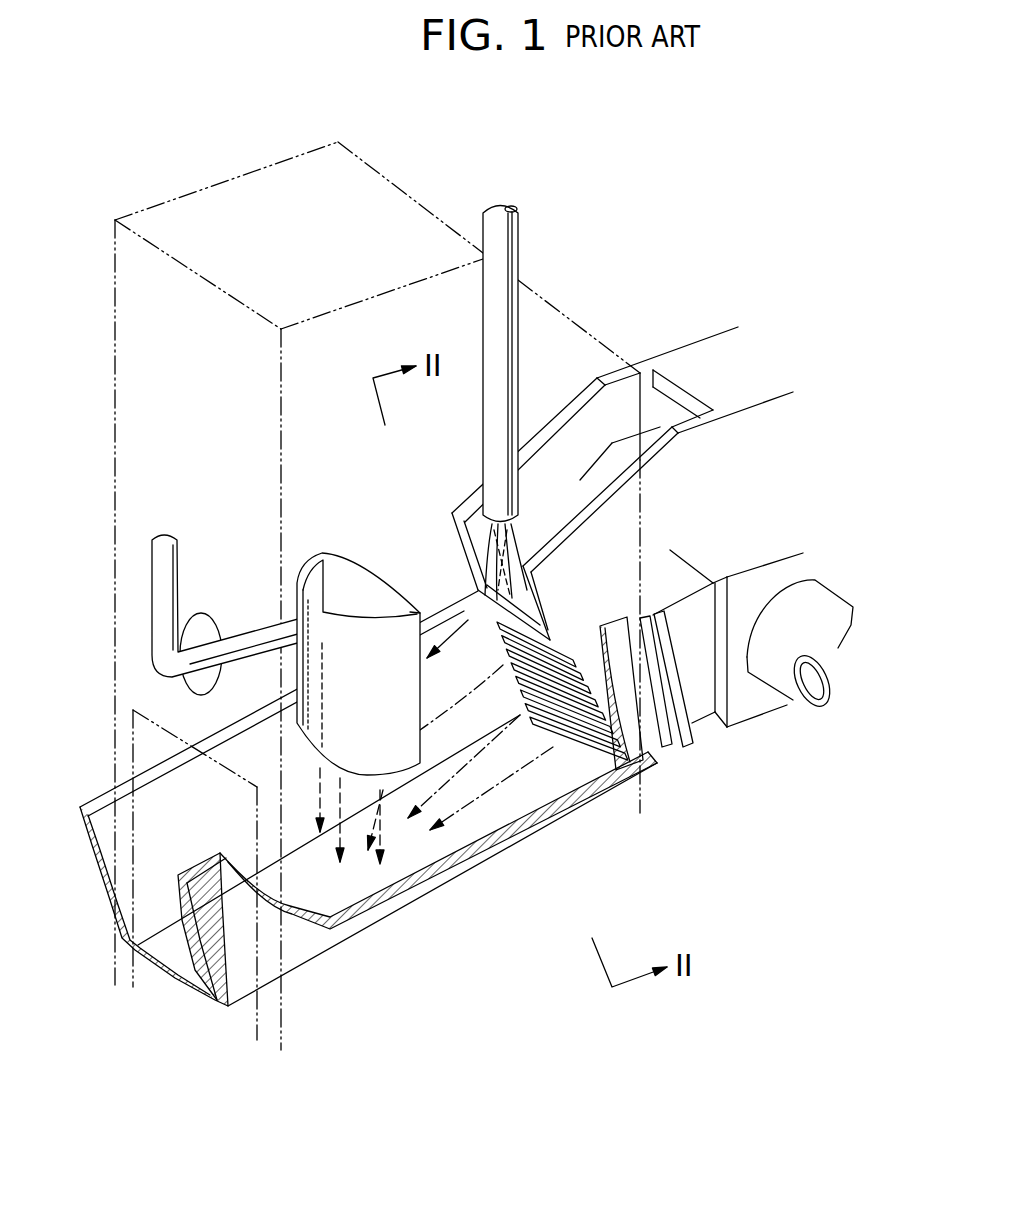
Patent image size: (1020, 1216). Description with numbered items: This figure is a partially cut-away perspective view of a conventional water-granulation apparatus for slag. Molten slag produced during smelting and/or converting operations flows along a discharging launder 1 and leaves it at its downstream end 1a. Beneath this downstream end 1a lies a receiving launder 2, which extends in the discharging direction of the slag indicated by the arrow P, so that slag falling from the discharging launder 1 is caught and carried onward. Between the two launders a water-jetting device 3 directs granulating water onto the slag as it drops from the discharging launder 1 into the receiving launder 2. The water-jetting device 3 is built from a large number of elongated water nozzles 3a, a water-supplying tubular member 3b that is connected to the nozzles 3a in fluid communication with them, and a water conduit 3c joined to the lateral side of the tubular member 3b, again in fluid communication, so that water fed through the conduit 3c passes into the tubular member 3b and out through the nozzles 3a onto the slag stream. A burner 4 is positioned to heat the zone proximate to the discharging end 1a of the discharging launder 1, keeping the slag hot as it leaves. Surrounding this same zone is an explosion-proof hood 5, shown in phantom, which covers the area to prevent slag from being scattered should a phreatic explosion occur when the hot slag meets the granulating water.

The discharging launder 1 is at (700, 356).
The downstream end of the discharging launder 1a is at (498, 614).
The receiving launder 2 is at (427, 900).
The water-jetting device 3 is at (840, 788).
The elongated water nozzles 3a is at (585, 745).
The water-supplying tubular member 3b is at (747, 710).
The water conduit 3c is at (797, 703).
The burner 4 is at (518, 318).
The explosion-proof hood 5 is at (113, 306).
The arrow indicating discharging direction of the slag P is at (452, 630).